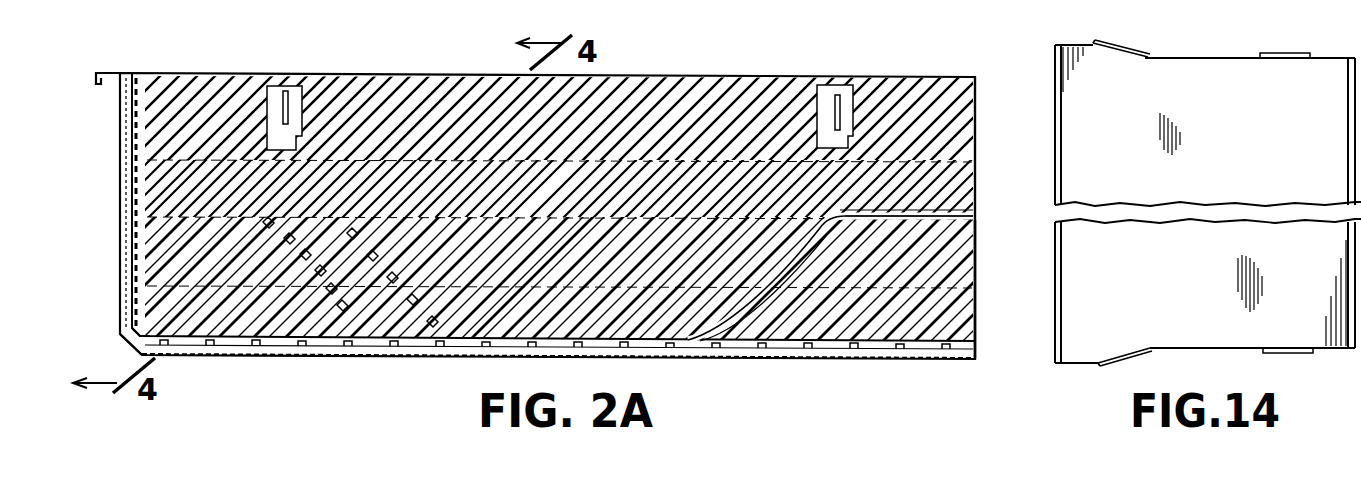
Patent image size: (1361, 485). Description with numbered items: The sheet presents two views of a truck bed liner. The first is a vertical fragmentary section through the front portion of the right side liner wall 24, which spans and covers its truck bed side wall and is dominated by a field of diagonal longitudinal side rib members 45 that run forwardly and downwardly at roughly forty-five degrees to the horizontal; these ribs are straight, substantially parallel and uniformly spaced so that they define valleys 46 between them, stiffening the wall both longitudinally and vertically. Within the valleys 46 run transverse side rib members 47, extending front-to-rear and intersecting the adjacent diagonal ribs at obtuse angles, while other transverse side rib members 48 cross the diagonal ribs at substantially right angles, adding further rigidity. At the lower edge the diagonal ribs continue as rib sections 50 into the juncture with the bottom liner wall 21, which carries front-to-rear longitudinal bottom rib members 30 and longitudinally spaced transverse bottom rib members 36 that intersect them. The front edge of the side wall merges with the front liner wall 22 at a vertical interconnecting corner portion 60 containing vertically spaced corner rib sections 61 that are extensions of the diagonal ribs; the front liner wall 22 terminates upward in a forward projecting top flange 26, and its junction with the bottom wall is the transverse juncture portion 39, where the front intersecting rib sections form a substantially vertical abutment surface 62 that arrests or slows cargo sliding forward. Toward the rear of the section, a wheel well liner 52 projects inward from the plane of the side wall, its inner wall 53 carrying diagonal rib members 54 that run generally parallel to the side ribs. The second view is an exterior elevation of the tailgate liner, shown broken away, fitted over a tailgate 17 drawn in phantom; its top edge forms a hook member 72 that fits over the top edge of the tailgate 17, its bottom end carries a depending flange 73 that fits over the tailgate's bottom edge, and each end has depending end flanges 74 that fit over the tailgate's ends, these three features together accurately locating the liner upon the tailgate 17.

In FIG. 14, the tailgate 17 is at (1255, 126).
In FIG. 2A, the bottom liner wall 21 is at (778, 368).
In FIG. 2A, the front liner wall 22 is at (106, 221).
In FIG. 2A, the right side liner wall 24 is at (697, 112).
In FIG. 2A, the forward projecting top flange 26 is at (96, 74).
In FIG. 2A, the longitudinal bottom rib member 30 is at (895, 358).
In FIG. 2A, the transverse bottom rib member 36 is at (750, 358).
In FIG. 2A, the transverse intersecting or juncture portion 39 is at (120, 345).
In FIG. 2A, the diagonal longitudinal side rib member 45 is at (185, 261).
In FIG. 2A, the valley 46 is at (923, 90).
In FIG. 2A, the transverse side rib member 47 is at (412, 217).
In FIG. 2A, the transverse side rib member 48 is at (405, 306).
In FIG. 2A, the rib section 50 is at (433, 344).
In FIG. 2A, the wheel well liner 52 is at (927, 261).
In FIG. 2A, the inner wall 53 is at (965, 215).
In FIG. 2A, the diagonal rib member 54 is at (955, 283).
In FIG. 2A, the vertical interconnecting corner portion 60 is at (160, 72).
In FIG. 2A, the corner rib section 61 is at (137, 130).
In FIG. 2A, the abutment surface 62 is at (148, 345).
In FIG. 14, the hook member 72 is at (1350, 237).
In FIG. 14, the depending flange 73 is at (1062, 243).
In FIG. 14, the depending end flange 74 is at (1275, 55).